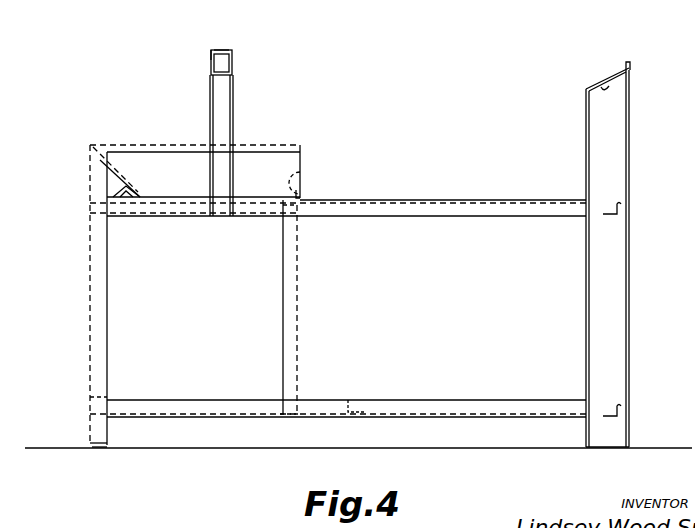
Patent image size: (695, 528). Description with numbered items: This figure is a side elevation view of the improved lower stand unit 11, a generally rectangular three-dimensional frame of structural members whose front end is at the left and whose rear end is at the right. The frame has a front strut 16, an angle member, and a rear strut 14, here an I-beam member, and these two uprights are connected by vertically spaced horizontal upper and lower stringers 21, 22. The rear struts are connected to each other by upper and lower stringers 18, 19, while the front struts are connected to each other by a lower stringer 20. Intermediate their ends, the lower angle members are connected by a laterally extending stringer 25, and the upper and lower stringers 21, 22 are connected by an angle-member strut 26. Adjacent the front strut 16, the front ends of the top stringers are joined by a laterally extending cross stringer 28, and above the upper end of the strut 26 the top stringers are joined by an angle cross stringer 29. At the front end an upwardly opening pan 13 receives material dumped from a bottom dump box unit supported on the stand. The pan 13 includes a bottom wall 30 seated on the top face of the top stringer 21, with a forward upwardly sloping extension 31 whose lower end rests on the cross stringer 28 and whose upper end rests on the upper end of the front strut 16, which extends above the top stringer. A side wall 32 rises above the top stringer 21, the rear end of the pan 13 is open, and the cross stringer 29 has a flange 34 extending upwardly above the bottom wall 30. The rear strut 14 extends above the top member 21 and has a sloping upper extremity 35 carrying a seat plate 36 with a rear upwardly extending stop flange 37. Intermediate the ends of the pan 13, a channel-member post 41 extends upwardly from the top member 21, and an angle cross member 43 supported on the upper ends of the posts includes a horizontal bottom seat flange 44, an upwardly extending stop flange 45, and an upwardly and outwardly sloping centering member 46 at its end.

The lower stand unit 11 is at (625, 238).
The pan 13 is at (213, 176).
The rear strut 14 is at (625, 238).
The front strut 16 is at (90, 318).
The upper stringer 18 is at (621, 209).
The lower stringer 19 is at (621, 411).
The lower stringer 20 is at (90, 404).
The upper stringer 21 is at (413, 206).
The lower stringer 22 is at (314, 389).
The laterally extending stringer 25 is at (349, 398).
The strut 26 is at (297, 287).
The cross stringer 28 is at (122, 196).
The cross stringer 29 is at (302, 193).
The bottom wall 30 is at (245, 197).
The forward upwardly sloping extension 31 is at (125, 186).
The side wall 32 is at (203, 193).
The flange 34 is at (300, 180).
The sloping upper extremity 35 is at (604, 86).
The seat plate 36 is at (619, 72).
The stop flange 37 is at (631, 68).
The post 41 is at (222, 119).
The angle cross member 43 is at (220, 50).
The bottom seat flange 44 is at (228, 72).
The stop flange 45 is at (211, 56).
The centering member 46 is at (220, 54).